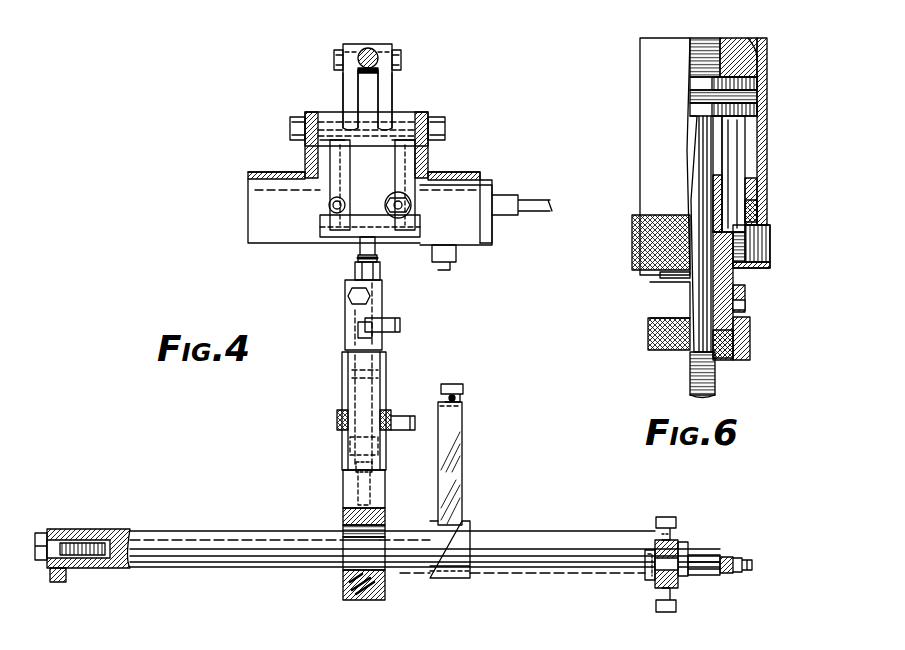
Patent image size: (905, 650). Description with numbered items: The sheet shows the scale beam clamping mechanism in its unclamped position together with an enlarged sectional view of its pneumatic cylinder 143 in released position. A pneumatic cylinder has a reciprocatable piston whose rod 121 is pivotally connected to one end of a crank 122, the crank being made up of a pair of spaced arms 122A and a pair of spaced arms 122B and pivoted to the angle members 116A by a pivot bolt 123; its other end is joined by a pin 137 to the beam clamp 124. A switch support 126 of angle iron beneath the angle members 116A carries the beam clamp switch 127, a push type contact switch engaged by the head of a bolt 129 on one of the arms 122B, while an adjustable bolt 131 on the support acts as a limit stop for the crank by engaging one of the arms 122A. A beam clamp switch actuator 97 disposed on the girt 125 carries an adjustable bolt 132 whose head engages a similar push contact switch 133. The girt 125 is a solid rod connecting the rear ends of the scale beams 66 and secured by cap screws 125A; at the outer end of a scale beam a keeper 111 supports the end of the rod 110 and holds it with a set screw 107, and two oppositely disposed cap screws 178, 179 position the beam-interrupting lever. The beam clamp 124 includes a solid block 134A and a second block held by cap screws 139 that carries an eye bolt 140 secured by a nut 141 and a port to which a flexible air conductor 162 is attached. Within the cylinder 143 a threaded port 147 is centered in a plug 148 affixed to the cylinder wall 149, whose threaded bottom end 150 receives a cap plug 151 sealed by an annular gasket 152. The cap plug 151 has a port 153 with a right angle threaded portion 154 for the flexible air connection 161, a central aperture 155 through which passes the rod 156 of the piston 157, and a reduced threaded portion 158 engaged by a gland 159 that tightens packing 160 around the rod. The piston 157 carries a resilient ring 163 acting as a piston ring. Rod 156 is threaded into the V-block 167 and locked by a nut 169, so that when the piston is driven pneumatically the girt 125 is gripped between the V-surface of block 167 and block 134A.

In FIG. 4, the piston rod 121 is at (371, 49).
In FIG. 4, the crank 122 is at (396, 86).
In FIG. 4, the spaced arms 122A is at (346, 88).
In FIG. 4, the spaced arms 122B is at (338, 163).
In FIG. 4, the pivot bolt 123 is at (440, 122).
In FIG. 4, the beam clamp switch 127 is at (408, 200).
In FIG. 4, the switch support 126 is at (256, 204).
In FIG. 4, the angle members 116A is at (262, 173).
In FIG. 4, the adjustable bolt 131 is at (328, 205).
In FIG. 4, the bolt 129 is at (412, 204).
In FIG. 4, the pin 137 is at (322, 232).
In FIG. 4, the switch 133 is at (484, 224).
In FIG. 4, the eye bolt 140 is at (356, 260).
In FIG. 4, the nut 141 is at (354, 276).
In FIG. 4, the cap screws 139 is at (346, 316).
In FIG. 4, the flexible air conductor 162 is at (398, 320).
In FIG. 4, the pneumatic cylinder 143 is at (390, 372).
In FIG. 6, the pneumatic cylinder 143 is at (640, 141).
In FIG. 4, the cylinder wall 149 is at (386, 390).
In FIG. 6, the cylinder wall 149 is at (766, 140).
In FIG. 4, the beam clamp 124 is at (342, 390).
In FIG. 4, the cap plug 151 is at (338, 420).
In FIG. 6, the cap plug 151 is at (634, 251).
In FIG. 4, the flexible air connection 161 is at (406, 414).
In FIG. 4, the gland 159 is at (350, 452).
In FIG. 6, the gland 159 is at (752, 342).
In FIG. 4, the nut 169 is at (356, 468).
In FIG. 4, the piston rod 156 is at (358, 485).
In FIG. 6, the piston rod 156 is at (702, 168).
In FIG. 4, the V-block 167 is at (343, 512).
In FIG. 4, the beam girt 125 is at (540, 540).
In FIG. 4, the cap screws 125A is at (44, 533).
In FIG. 4, the scale beam 66 is at (62, 582).
In FIG. 4, the solid block 134A is at (368, 602).
In FIG. 4, the adjustable bolt 132 is at (454, 383).
In FIG. 4, the beam clamp switch actuator 97 is at (465, 446).
In FIG. 4, the cap screw 178 is at (667, 517).
In FIG. 4, the cap screw 179 is at (666, 612).
In FIG. 4, the keeper 111 is at (702, 576).
In FIG. 4, the rod 110 is at (732, 557).
In FIG. 4, the set screw 107 is at (755, 562).
In FIG. 6, the threaded port 147 is at (715, 47).
In FIG. 6, the plug 148 is at (762, 60).
In FIG. 6, the resilient ring 163 is at (758, 86).
In FIG. 6, the piston 157 is at (756, 112).
In FIG. 6, the port 153 is at (732, 182).
In FIG. 6, the threaded bottom end 150 is at (760, 188).
In FIG. 6, the annular gasket 152 is at (760, 208).
In FIG. 6, the right angle threaded portion 154 is at (762, 246).
In FIG. 6, the central aperture 155 is at (738, 292).
In FIG. 6, the reduced threaded portion 158 is at (740, 304).
In FIG. 6, the packing 160 is at (745, 352).